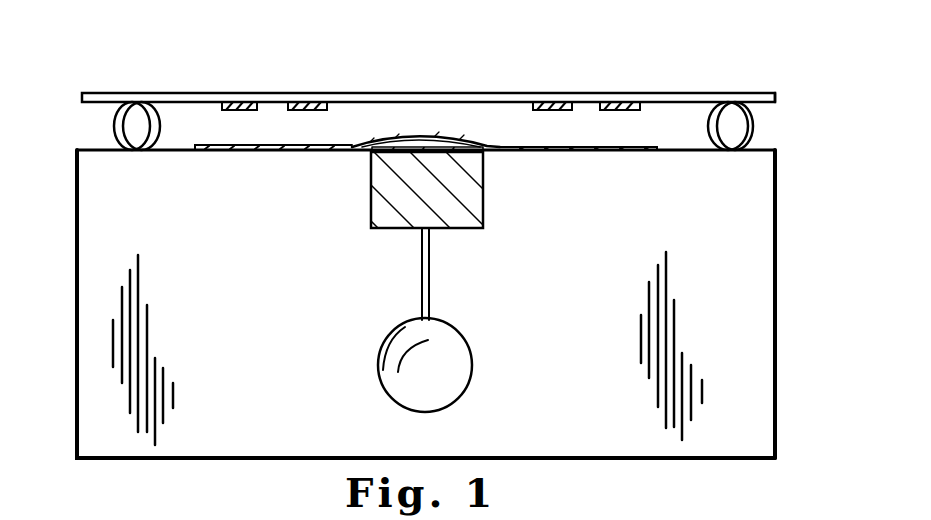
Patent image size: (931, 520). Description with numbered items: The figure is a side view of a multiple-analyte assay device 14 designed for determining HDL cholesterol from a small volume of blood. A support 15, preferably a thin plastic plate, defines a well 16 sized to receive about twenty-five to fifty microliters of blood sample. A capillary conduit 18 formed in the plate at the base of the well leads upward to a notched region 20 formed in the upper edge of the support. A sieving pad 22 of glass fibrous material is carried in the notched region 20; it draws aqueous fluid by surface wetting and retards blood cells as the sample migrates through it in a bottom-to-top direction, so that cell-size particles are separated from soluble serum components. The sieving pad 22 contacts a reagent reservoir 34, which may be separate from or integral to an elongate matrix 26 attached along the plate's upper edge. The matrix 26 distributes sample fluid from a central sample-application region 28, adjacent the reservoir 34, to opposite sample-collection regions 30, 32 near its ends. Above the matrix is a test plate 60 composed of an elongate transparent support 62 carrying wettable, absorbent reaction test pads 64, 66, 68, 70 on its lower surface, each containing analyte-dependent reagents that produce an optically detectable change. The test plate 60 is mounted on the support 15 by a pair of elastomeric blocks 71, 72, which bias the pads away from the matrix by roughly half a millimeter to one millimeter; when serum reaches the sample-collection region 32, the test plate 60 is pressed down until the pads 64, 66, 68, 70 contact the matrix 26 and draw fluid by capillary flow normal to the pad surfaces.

The multiple-analyte assay device 14 is at (75, 315).
The support 15 is at (776, 313).
The well 16 is at (457, 368).
The capillary conduit 18 is at (430, 270).
The notched region 20 is at (482, 228).
The sieving pad 22 is at (477, 180).
The matrix 26 is at (290, 154).
The sample-application region 28 is at (420, 138).
The sample-collection region 30 is at (280, 140).
The sample-collection region 32 is at (579, 144).
The reagent reservoir 34 is at (440, 148).
The test plate 60 is at (497, 94).
The elongate support 62 is at (767, 95).
The reaction test pad 64 is at (242, 108).
The reaction test pad 66 is at (310, 108).
The reaction test pad 68 is at (550, 108).
The reaction test pad 70 is at (618, 108).
The elastomeric block 71 is at (127, 137).
The elastomeric block 72 is at (720, 135).